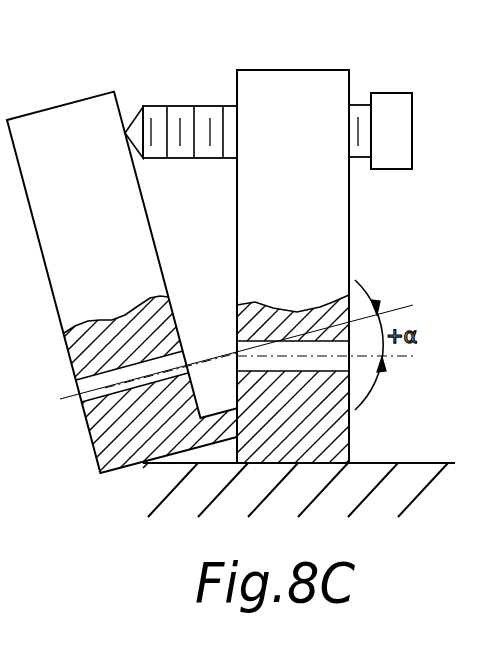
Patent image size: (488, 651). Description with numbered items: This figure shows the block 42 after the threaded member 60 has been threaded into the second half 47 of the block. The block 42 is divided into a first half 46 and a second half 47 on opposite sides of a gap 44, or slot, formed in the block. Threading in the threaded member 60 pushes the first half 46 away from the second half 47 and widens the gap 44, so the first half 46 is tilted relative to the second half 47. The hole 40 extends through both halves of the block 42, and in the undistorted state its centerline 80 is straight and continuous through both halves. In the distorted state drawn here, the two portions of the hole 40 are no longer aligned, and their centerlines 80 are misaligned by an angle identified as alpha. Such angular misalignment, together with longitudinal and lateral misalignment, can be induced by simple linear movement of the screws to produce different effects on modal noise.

The first half 46 is at (74, 111).
The second half 47 is at (306, 78).
The threaded member 60 is at (402, 130).
The gap 44 is at (190, 236).
The hole 40 is at (235, 352).
The centerline 80 is at (78, 397).
The block 42 is at (351, 437).